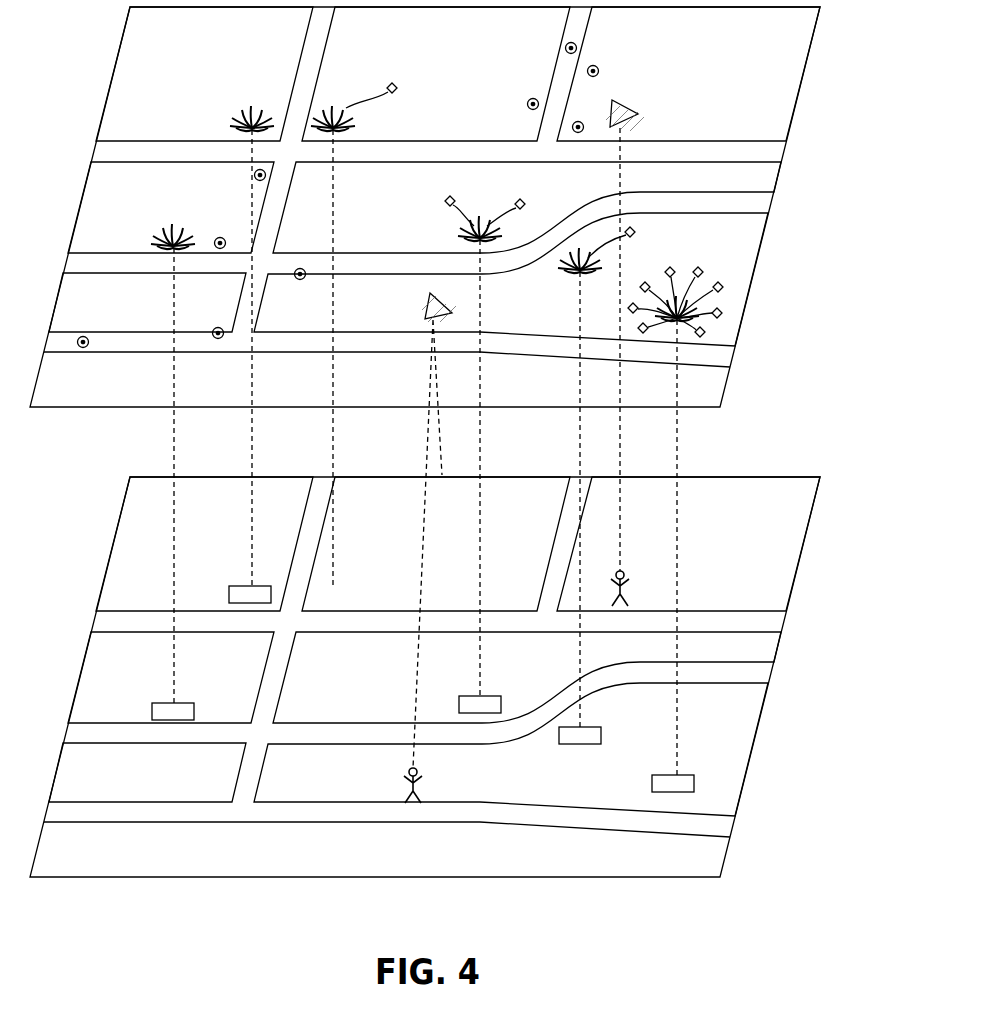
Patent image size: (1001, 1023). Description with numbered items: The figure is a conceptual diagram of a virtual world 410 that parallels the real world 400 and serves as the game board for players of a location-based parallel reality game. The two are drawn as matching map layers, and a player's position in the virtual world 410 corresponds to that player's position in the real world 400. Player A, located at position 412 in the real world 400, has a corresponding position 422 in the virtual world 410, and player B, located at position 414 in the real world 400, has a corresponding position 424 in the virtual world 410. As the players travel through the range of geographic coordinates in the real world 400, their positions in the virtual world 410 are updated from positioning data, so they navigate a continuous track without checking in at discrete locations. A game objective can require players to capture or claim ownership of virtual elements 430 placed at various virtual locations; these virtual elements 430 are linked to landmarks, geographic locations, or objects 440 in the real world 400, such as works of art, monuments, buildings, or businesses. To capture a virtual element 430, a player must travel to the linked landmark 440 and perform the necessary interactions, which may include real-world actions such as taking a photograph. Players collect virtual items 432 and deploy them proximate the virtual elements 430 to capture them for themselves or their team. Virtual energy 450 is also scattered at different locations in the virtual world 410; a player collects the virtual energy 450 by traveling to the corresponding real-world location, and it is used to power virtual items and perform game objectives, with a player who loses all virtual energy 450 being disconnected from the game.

The real world 400 is at (793, 585).
The virtual world 410 is at (790, 118).
The position of player A in the real world 412 is at (406, 775).
The position of player B in the real world 414 is at (624, 572).
The corresponding position of player A in the virtual world 422 is at (452, 313).
The corresponding position of player B in the virtual world 424 is at (642, 113).
The virtual elements 430 is at (250, 104).
The virtual items 432 is at (403, 82).
The landmarks, geographic locations, or objects 440 is at (238, 586).
The virtual energy 450 is at (600, 70).